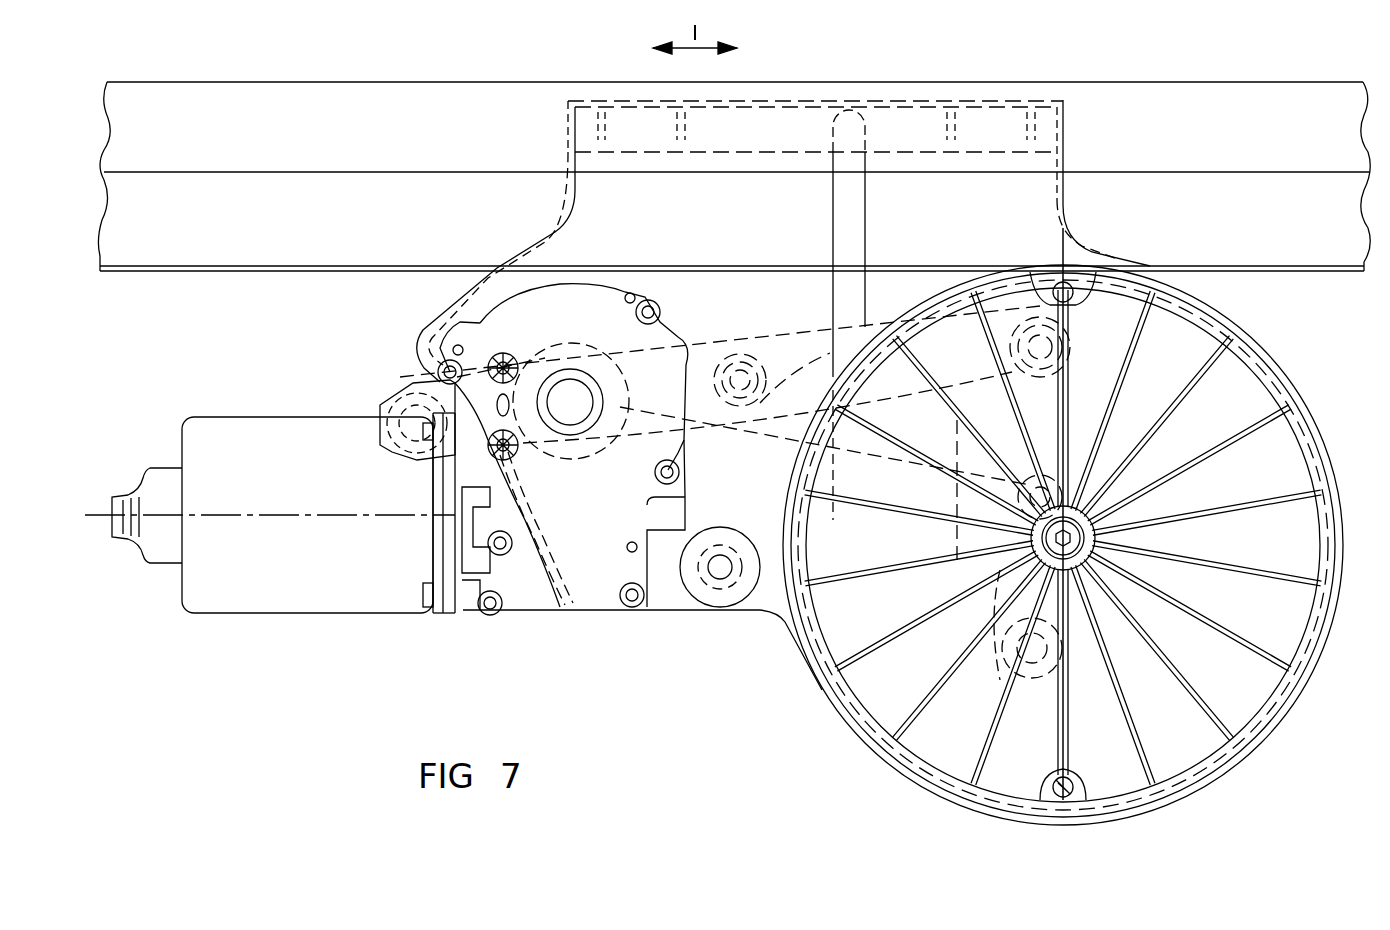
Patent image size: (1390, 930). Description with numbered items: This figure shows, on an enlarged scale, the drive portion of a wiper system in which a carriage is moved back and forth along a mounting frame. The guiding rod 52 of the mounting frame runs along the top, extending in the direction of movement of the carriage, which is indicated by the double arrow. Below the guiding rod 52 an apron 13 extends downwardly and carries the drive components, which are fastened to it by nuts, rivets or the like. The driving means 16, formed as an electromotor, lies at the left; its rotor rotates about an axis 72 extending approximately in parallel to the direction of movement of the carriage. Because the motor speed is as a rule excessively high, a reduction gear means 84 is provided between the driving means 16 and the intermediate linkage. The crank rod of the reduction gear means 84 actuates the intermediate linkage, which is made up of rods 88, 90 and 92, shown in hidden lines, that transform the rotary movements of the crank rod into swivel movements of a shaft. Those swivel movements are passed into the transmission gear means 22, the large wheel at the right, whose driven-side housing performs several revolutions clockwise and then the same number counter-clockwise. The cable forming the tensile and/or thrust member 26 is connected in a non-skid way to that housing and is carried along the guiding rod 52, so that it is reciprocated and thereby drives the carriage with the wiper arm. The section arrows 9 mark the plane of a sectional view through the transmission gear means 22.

The section line 9- 9 is at (1063, 231).
The apron 13 is at (1032, 184).
The driving means 16 is at (205, 598).
The transmission gear means 22 is at (1205, 788).
The tensile and/or thrust member 26 is at (340, 264).
The guiding rod 52 is at (377, 152).
The axis 72 is at (88, 500).
The reduction gear means 84 is at (595, 580).
The rod 88 is at (712, 325).
The rod 90 is at (806, 320).
The rod 92 is at (930, 592).